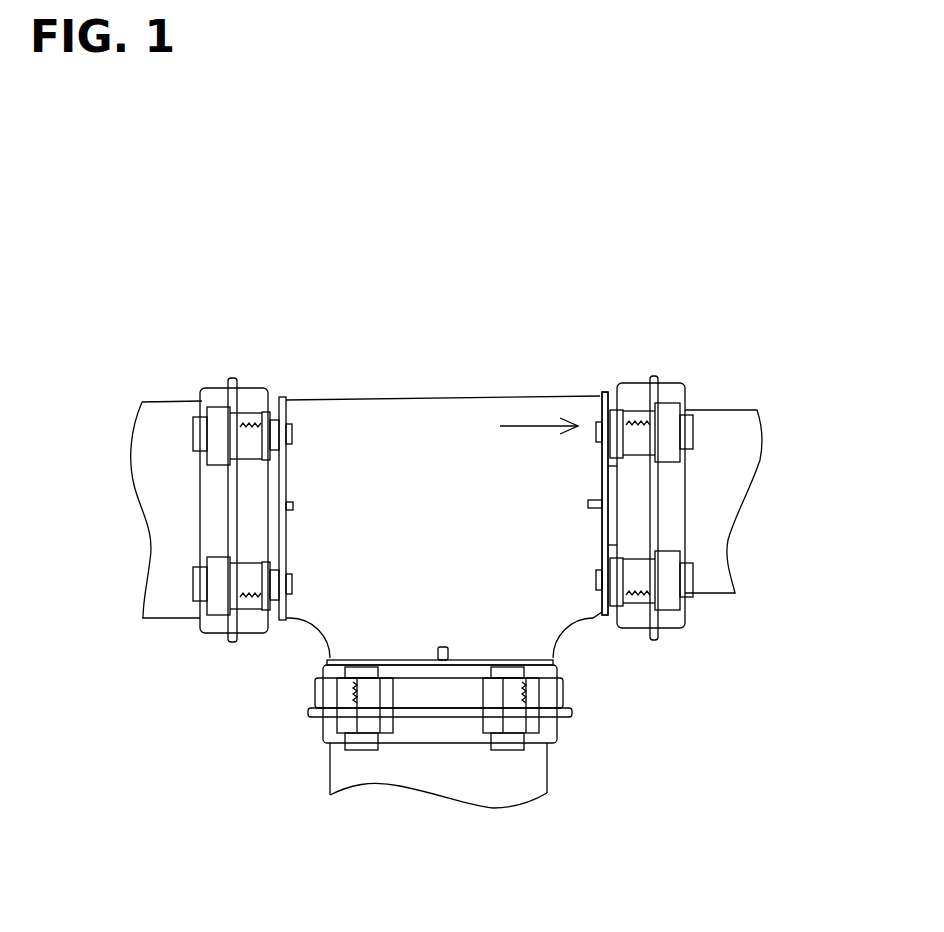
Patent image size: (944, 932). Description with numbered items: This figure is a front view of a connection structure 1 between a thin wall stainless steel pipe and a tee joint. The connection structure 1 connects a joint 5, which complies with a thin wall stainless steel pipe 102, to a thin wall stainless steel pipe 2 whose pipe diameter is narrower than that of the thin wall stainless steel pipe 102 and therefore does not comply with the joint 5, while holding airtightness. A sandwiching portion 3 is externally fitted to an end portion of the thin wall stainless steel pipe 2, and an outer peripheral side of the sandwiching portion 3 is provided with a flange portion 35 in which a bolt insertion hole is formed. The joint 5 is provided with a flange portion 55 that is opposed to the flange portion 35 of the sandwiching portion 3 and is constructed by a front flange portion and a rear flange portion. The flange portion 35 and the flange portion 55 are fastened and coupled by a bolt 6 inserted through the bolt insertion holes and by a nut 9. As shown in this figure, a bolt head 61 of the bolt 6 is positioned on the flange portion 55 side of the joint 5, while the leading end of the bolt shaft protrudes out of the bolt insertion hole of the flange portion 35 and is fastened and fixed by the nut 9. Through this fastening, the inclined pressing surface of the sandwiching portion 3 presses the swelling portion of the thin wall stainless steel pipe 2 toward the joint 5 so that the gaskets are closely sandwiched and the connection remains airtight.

The connection structure 1 is at (655, 318).
The thin wall stainless steel pipe 2 is at (713, 522).
The sandwiching portion 3 is at (681, 396).
The joint 5 is at (395, 408).
The bolt 6 is at (588, 400).
The bolt head 61 is at (592, 592).
The nut 9 is at (688, 403).
The flange portion 35 is at (665, 452).
The flange portion 55 is at (685, 477).
The thin wall stainless steel pipe 102 is at (168, 608).